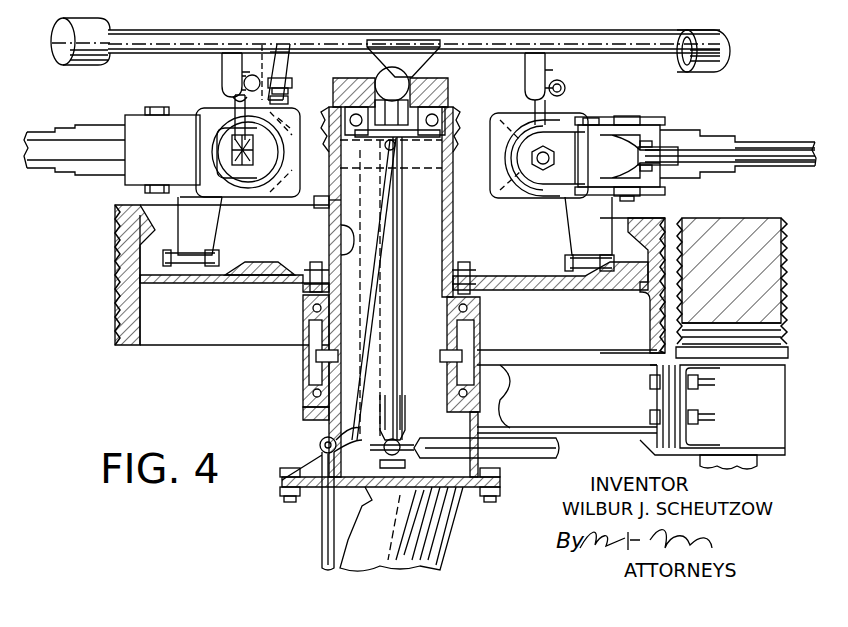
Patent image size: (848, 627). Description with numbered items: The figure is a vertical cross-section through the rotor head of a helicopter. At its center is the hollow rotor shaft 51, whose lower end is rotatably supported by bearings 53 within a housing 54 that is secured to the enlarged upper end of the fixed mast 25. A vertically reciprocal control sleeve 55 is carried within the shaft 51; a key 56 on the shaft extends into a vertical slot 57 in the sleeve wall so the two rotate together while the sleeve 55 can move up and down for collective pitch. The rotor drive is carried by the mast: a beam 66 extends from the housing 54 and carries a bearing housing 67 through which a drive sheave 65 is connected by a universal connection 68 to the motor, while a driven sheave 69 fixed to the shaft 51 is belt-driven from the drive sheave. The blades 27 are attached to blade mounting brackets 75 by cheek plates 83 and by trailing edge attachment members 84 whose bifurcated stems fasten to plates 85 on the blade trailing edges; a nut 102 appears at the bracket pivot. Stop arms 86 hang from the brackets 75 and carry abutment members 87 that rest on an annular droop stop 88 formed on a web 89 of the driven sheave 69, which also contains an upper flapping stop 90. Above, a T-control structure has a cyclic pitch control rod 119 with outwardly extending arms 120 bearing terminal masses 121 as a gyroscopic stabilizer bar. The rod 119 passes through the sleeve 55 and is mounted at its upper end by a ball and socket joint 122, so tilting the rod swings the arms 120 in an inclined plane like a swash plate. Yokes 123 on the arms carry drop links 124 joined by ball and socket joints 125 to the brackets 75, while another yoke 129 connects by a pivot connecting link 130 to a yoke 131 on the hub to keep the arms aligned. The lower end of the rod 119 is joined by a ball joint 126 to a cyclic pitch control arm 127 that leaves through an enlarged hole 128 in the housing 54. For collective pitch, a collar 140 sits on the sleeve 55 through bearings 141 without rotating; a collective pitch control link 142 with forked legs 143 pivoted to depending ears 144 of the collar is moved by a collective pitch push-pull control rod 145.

The fixed mast 25 is at (442, 518).
The blades 27 is at (796, 142).
The hollow shaft 51 is at (450, 244).
The bearings 53 is at (304, 388).
The housing 54 is at (304, 413).
The control sleeve 55 is at (448, 80).
The key 56 is at (316, 214).
The vertical slot 57 is at (334, 246).
The drive sheave 65 is at (778, 270).
The beam 66 is at (596, 432).
The bearing housing 67 is at (768, 414).
The universal connection 68 is at (748, 468).
The driven sheave 69 is at (182, 350).
The blade mounting brackets 75 is at (137, 118).
The cheek plates 83 is at (70, 130).
The trailing edge attachment members 84 is at (590, 134).
The plates 85 is at (678, 150).
The stop arms 86 is at (205, 222).
The abutment members 87 is at (186, 288).
The annular droop stop 88 is at (228, 270).
The web 89 is at (545, 282).
The upper flapping stop 90 is at (118, 238).
The nut 102 is at (556, 160).
The cyclic pitch control rod 119 is at (398, 286).
The arms 120 is at (131, 55).
The terminal masses 121 is at (97, 66).
The ball and socket joint 122 is at (370, 60).
The yokes 123 is at (224, 67).
The drop links 124 is at (234, 100).
The ball and socket joints 125 is at (232, 152).
The ball joint 126 is at (398, 442).
The cyclic pitch control arm 127 is at (550, 462).
The enlarged hole 128 is at (466, 462).
The yoke 129 is at (292, 60).
The pivot connecting link 130 is at (288, 78).
The yoke 131 is at (288, 100).
The collar 140 is at (396, 150).
The bearings 141 is at (452, 108).
The collective pitch control link 142 is at (320, 438).
The forked legs 143 is at (375, 212).
The depending ears 144 is at (385, 178).
The collective pitch push-pull control rod 145 is at (320, 542).